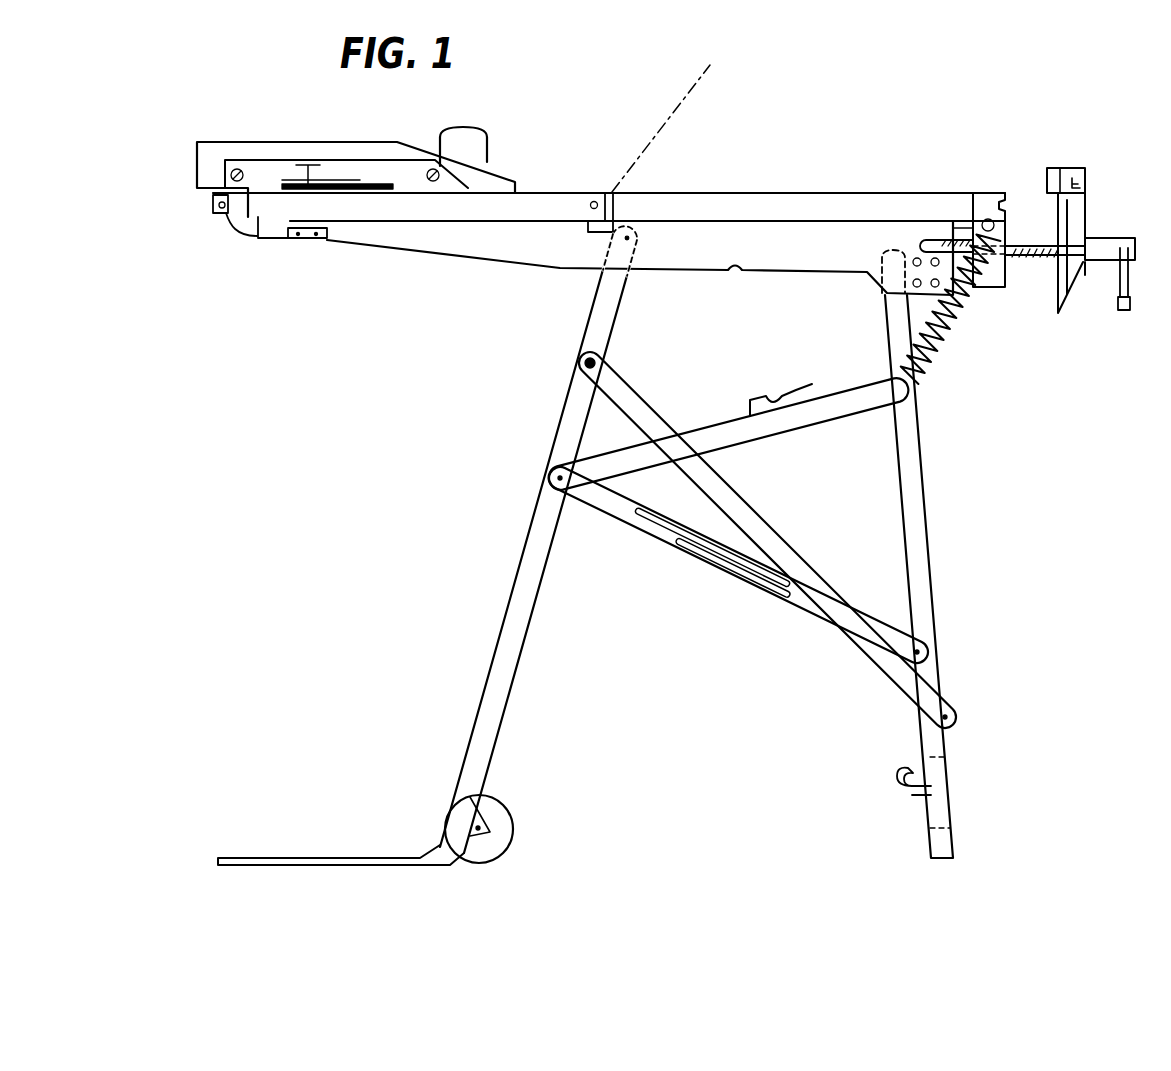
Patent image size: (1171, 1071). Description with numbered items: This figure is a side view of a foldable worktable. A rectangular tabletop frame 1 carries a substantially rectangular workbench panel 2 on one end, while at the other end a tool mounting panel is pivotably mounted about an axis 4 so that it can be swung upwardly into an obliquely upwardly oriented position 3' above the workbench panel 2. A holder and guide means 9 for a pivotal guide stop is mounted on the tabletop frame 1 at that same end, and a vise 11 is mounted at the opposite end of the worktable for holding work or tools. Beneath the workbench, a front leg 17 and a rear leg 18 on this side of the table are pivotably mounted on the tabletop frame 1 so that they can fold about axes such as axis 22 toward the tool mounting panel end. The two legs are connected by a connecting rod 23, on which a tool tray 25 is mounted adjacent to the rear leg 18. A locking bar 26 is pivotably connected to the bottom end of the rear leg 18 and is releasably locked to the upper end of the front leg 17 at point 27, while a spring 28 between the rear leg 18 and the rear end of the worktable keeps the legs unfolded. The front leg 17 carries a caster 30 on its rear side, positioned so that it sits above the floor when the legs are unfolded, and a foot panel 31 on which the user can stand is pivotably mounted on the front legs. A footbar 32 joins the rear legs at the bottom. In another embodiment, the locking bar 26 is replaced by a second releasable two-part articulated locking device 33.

The tabletop frame 1 is at (450, 243).
The workbench panel 2 is at (782, 207).
The obliquely upwardly oriented position 3' is at (676, 128).
The axis 4 is at (591, 198).
The holder and guide means 9 is at (217, 236).
The vise 11 is at (1100, 214).
The front leg 17 is at (492, 688).
The rear leg 18 is at (930, 603).
The axis 22 is at (893, 262).
The connecting rod 23 is at (826, 410).
The tool tray 25 is at (822, 388).
The locking bar 26 is at (772, 534).
The point 27 is at (586, 362).
The spring 28 is at (958, 310).
The caster 30 is at (506, 823).
The foot panel 31 is at (265, 857).
The footbar 32 is at (944, 735).
The second releasable two-part articulated locking device 33 is at (703, 561).